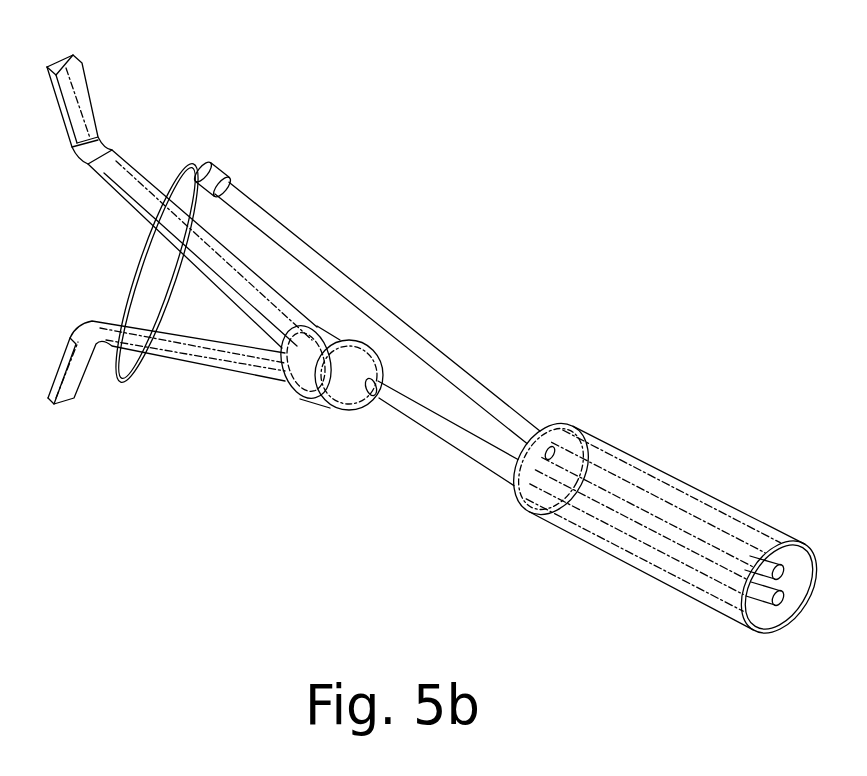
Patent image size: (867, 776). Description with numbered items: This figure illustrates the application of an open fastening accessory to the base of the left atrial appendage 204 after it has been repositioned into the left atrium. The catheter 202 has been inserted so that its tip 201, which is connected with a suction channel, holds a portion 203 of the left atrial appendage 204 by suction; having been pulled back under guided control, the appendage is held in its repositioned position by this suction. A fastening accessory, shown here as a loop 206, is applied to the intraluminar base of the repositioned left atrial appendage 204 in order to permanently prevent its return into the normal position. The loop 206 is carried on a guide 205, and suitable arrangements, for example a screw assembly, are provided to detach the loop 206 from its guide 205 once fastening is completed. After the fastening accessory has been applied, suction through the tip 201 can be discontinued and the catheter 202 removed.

The tip 201 is at (323, 414).
The catheter 202 is at (678, 465).
The portion of the left atrial appendage 203 is at (284, 388).
The left atrial appendage 204 is at (143, 160).
The guide 205 is at (394, 307).
The loop 206 is at (135, 267).